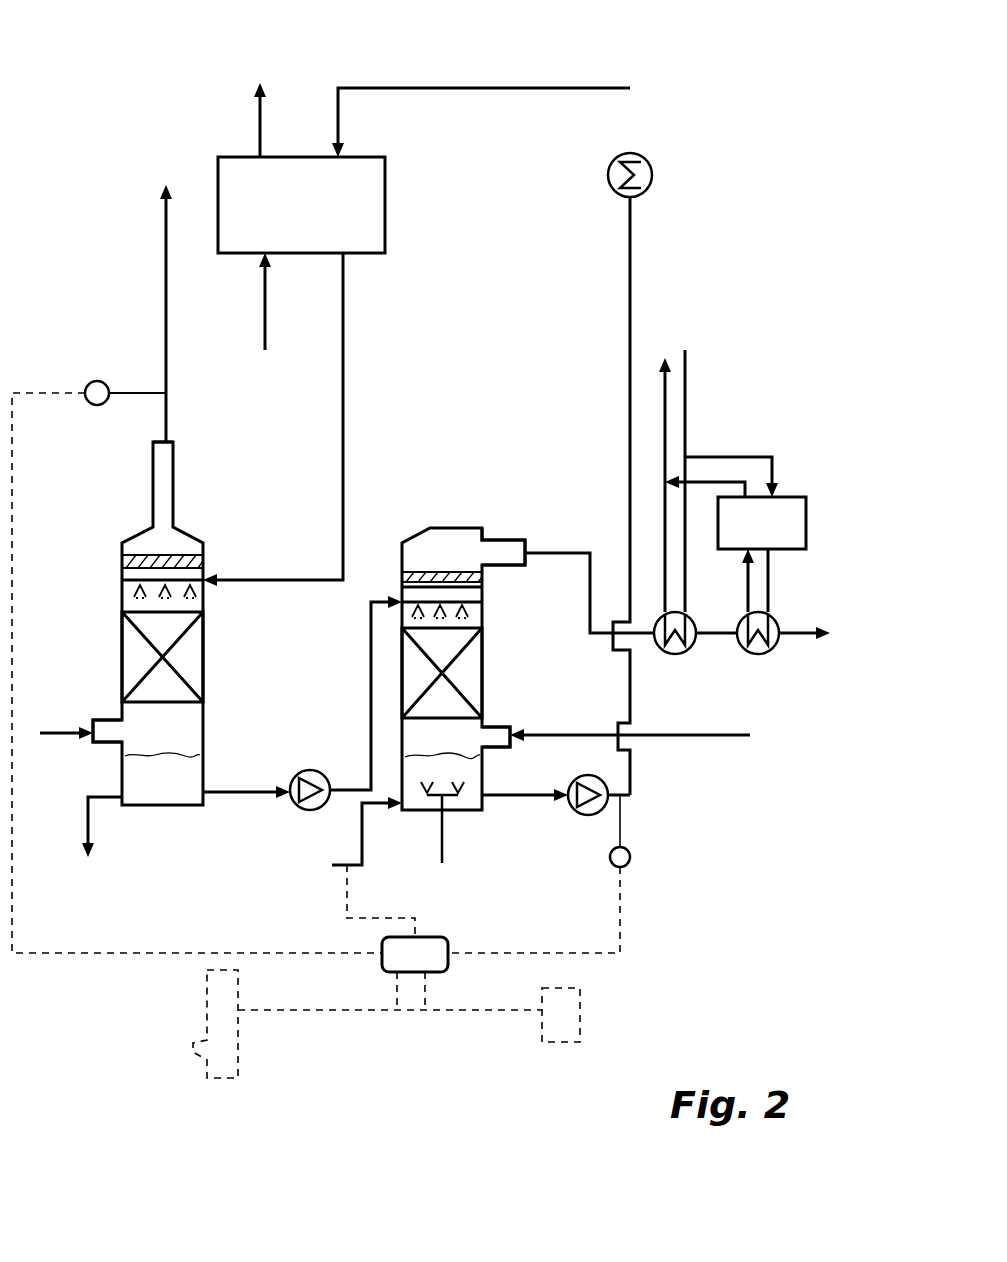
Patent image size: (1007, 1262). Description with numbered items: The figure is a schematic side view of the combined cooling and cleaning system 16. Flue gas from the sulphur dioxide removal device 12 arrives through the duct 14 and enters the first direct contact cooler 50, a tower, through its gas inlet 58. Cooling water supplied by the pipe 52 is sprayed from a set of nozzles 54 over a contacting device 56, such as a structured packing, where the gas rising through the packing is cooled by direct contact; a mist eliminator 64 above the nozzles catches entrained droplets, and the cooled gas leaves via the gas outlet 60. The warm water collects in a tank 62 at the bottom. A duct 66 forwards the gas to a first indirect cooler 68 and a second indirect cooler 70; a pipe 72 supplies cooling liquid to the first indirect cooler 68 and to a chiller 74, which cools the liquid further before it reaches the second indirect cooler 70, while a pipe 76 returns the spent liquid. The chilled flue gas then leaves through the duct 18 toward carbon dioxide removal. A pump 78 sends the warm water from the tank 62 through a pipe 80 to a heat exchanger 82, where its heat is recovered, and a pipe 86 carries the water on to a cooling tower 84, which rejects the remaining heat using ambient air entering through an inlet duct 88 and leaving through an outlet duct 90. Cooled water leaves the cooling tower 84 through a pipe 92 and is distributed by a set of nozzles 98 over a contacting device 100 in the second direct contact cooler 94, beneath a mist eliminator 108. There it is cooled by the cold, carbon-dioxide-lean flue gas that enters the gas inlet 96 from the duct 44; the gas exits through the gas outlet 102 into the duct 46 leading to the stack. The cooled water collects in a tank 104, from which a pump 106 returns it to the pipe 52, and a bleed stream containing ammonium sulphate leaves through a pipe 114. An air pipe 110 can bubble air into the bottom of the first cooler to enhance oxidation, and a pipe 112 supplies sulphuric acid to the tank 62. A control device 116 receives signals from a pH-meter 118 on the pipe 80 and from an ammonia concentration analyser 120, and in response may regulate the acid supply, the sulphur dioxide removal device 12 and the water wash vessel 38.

The sulphur dioxide removal device 12 is at (207, 1010).
The duct 14 is at (688, 736).
The combined cooling and cleaning system 16 is at (88, 95).
The duct 18 is at (790, 640).
The water wash vessel 38 is at (580, 1013).
The duct 44 is at (55, 727).
The duct 46 is at (166, 272).
The first direct contact cooler 50 is at (450, 528).
The pipe 52 is at (371, 730).
The set of nozzles 54 is at (480, 615).
The contacting device 56 is at (462, 660).
The gas inlet 58 is at (497, 722).
The gas outlet 60 is at (495, 528).
The tank 62 is at (472, 800).
The mist eliminator 64 is at (402, 575).
The duct 66 is at (552, 552).
The first indirect cooler 68 is at (680, 655).
The second indirect cooler 70 is at (762, 655).
The pipe 72 is at (685, 393).
The chiller 74 is at (806, 512).
The pipe 76 is at (662, 392).
The pump 78 is at (590, 812).
The pipe 80 is at (630, 268).
The heat exchanger 82 is at (643, 156).
The cooling tower 84 is at (385, 195).
The pipe 86 is at (475, 87).
The inlet duct 88 is at (265, 300).
The outlet duct 90 is at (260, 127).
The pipe 92 is at (343, 388).
The second direct contact cooler 94 is at (140, 532).
The gas inlet 96 is at (117, 720).
The set of nozzles 98 is at (195, 590).
The contacting device 100 is at (190, 656).
The gas outlet 102 is at (173, 480).
The tank 104 is at (165, 797).
The pump 106 is at (305, 812).
The mist eliminator 108 is at (122, 562).
The air pipe 110 is at (438, 826).
The pipe 112 is at (332, 868).
The pipe 114 is at (75, 838).
The control device 116 is at (448, 945).
The pH-meter 118 is at (632, 862).
The ammonia concentration analyser 120 is at (85, 387).